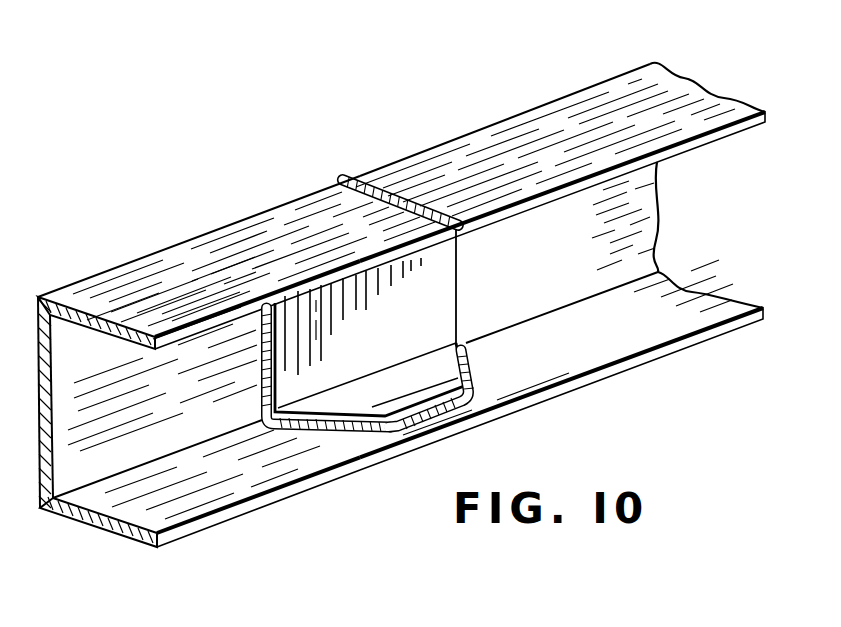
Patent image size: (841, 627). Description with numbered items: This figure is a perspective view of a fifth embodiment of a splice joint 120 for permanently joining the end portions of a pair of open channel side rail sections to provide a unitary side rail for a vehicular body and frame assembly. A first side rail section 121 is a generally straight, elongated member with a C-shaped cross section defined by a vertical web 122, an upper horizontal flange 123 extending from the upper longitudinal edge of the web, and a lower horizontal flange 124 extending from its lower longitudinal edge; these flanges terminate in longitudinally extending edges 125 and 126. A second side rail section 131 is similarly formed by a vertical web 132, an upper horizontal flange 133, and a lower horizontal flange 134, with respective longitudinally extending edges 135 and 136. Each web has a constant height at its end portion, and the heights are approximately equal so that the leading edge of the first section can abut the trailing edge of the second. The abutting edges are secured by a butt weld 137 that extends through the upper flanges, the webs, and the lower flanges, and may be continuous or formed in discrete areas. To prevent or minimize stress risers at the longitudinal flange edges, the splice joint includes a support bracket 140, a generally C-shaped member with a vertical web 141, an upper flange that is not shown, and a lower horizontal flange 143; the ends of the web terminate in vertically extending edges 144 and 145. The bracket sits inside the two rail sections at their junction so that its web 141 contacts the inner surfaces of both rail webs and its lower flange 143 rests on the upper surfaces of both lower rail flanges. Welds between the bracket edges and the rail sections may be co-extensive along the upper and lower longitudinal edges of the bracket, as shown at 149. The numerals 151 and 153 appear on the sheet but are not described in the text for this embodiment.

The splice joint 120 is at (310, 117).
The first side rail section 121 is at (519, 102).
The vertical web 122 is at (658, 243).
The upper horizontal flange 123 is at (663, 103).
The lower horizontal flange 124 is at (648, 337).
The longitudinally extending edge 125 is at (727, 132).
The longitudinally extending edge 126 is at (727, 328).
The second side rail section 131 is at (152, 231).
The vertical web 132 is at (75, 457).
The upper horizontal flange 133 is at (133, 302).
The lower horizontal flange 134 is at (137, 507).
The longitudinally extending edge 135 is at (197, 330).
The longitudinally extending edge 136 is at (195, 530).
The butt weld 137 is at (390, 194).
The support bracket 140 is at (485, 272).
The vertical web 141 is at (388, 346).
The lower horizontal flange 143 is at (395, 388).
The vertically extending edge 144 is at (277, 330).
The vertically extending edge 145 is at (458, 297).
The co-extensive weld 149 is at (462, 401).
The reference numeral (partial) 151 is at (604, 626).
The reference numeral (partial) 153 is at (750, 614).